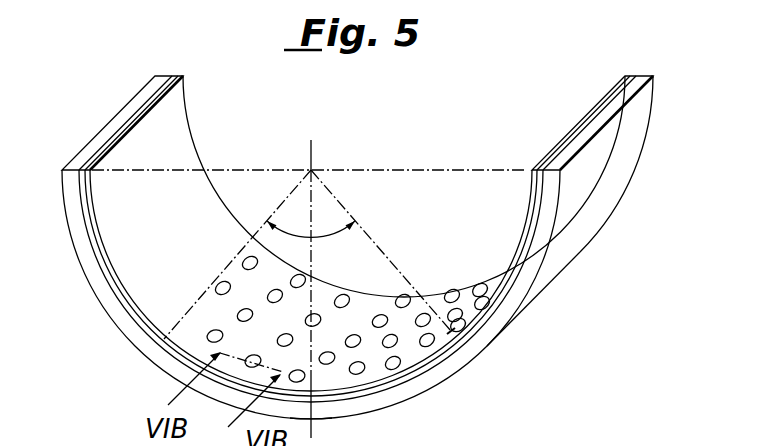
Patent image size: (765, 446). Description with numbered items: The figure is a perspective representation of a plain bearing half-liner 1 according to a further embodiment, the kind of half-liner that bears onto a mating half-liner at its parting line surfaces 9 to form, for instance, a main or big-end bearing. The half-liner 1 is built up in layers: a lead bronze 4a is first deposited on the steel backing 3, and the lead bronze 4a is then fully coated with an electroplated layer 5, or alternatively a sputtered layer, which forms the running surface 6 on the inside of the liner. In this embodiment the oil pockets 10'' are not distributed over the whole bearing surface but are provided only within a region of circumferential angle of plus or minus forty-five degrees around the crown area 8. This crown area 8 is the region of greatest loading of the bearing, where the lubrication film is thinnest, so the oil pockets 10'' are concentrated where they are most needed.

The plain bearing half-liner 1 is at (88, 128).
The steel backing 3 is at (463, 358).
The lead bronze 4a is at (110, 283).
The electroplated layer 5 is at (105, 242).
The inner sieve surface 6 is at (169, 143).
The crown area 8 is at (313, 418).
The parting line surfaces 9 is at (127, 107).
The oil pockets 10'' is at (349, 303).